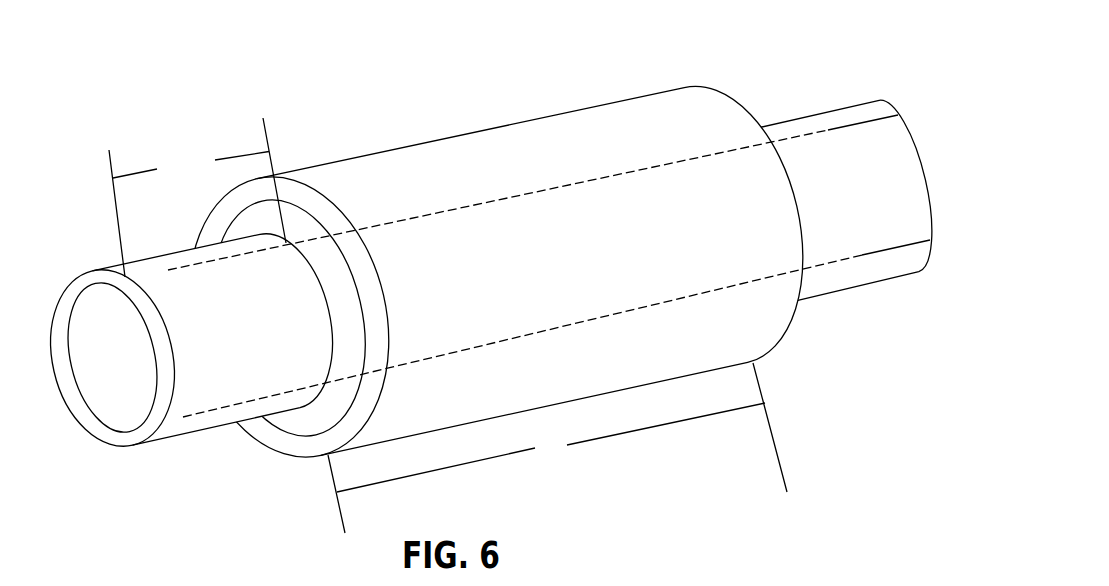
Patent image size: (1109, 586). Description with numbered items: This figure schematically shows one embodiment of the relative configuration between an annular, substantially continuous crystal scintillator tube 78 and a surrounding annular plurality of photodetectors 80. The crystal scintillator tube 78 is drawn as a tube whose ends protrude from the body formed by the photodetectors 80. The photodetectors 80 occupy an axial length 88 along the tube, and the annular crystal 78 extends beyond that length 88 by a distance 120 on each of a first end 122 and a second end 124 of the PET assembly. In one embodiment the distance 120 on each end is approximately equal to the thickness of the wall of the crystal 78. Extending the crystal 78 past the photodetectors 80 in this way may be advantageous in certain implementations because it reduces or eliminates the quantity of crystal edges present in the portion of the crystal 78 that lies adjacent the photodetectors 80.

The crystal scintillator tube 78 is at (93, 280).
The photodetectors 80 is at (405, 157).
The length of the photodetectors 88 is at (557, 448).
The distance 120 is at (197, 197).
The first end 122 is at (72, 442).
The second end 124 is at (928, 96).